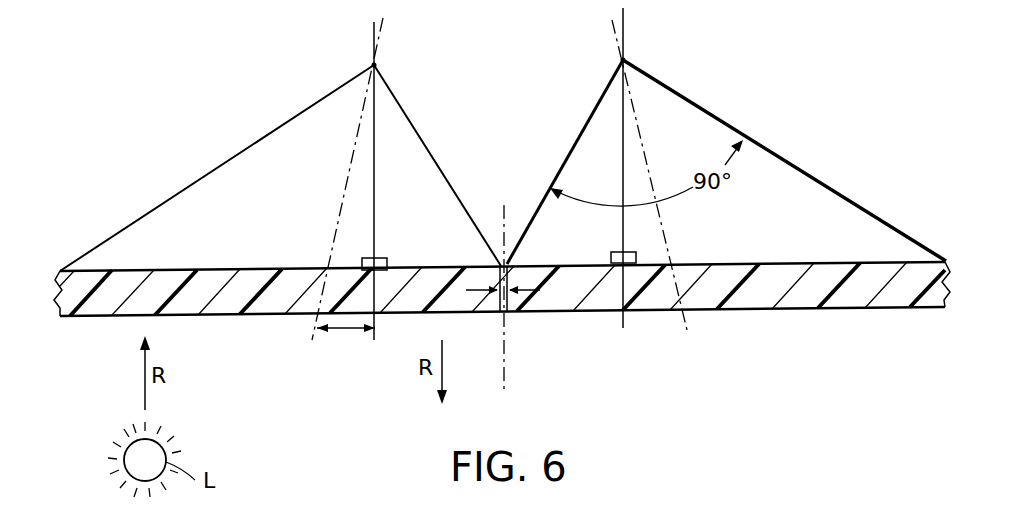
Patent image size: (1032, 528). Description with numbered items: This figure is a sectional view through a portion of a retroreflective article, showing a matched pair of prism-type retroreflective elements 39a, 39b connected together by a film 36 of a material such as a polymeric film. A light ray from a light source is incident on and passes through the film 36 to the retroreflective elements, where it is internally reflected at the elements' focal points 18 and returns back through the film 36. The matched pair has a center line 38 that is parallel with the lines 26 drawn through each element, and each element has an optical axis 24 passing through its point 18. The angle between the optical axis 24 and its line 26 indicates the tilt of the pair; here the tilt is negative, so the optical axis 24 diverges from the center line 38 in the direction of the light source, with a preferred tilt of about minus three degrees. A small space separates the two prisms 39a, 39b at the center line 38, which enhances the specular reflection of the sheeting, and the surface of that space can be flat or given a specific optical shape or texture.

The focal point of imaging lens 18 is at (375, 64).
The optical axis 24 is at (343, 195).
The line 26 is at (376, 207).
The film 36 is at (728, 308).
The center line 38 is at (513, 298).
The retroreflective element 39a is at (253, 142).
The retroreflective element 39b is at (800, 168).